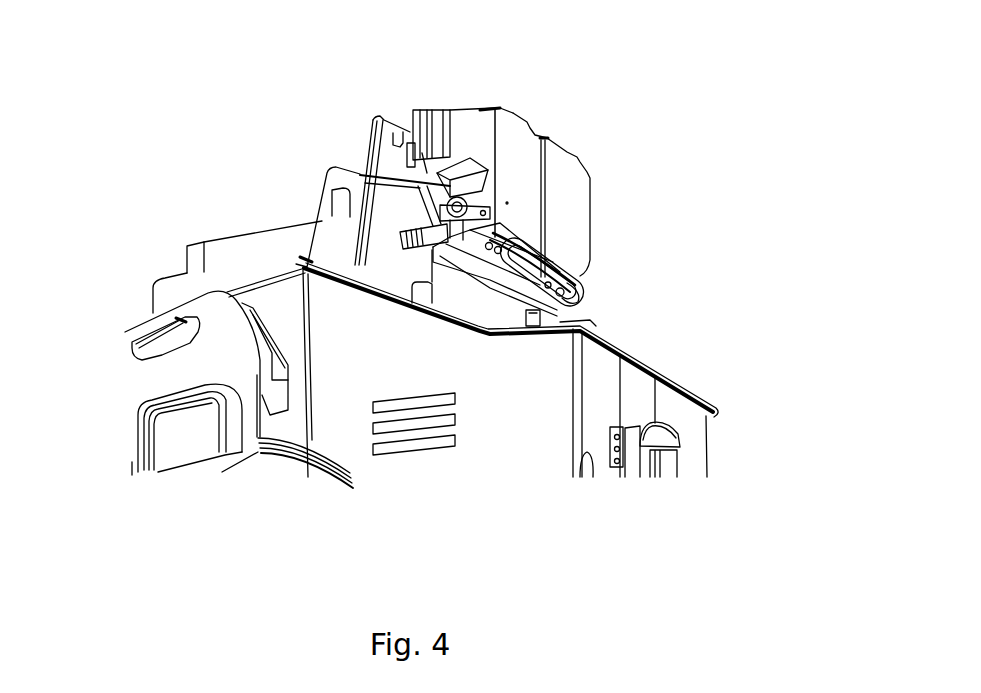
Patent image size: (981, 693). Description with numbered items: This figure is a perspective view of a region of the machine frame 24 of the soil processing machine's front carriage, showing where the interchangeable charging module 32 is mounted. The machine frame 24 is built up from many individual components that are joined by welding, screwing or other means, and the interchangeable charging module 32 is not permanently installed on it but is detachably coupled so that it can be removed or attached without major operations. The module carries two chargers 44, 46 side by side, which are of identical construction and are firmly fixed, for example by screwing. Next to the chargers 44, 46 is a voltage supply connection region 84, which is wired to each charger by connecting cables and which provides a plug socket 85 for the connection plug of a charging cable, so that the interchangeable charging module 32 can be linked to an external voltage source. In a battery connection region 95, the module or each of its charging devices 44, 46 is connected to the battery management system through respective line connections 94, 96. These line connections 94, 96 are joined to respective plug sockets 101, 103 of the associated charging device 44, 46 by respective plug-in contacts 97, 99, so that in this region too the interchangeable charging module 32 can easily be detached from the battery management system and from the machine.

The machine frame 24 is at (330, 432).
The interchangeable charging module 32 is at (610, 161).
The charger 44 is at (513, 111).
The charger 46 is at (568, 150).
The voltage supply connection region 84 is at (457, 117).
The plug socket 85 is at (360, 175).
The line connection 94 is at (513, 288).
The battery connection region 95 is at (590, 315).
The line connection 96 is at (575, 290).
The plug-in contact 97 is at (520, 238).
The plug-in contact 99 is at (575, 268).
The plug socket 101 is at (430, 243).
The plug socket 103 is at (587, 263).